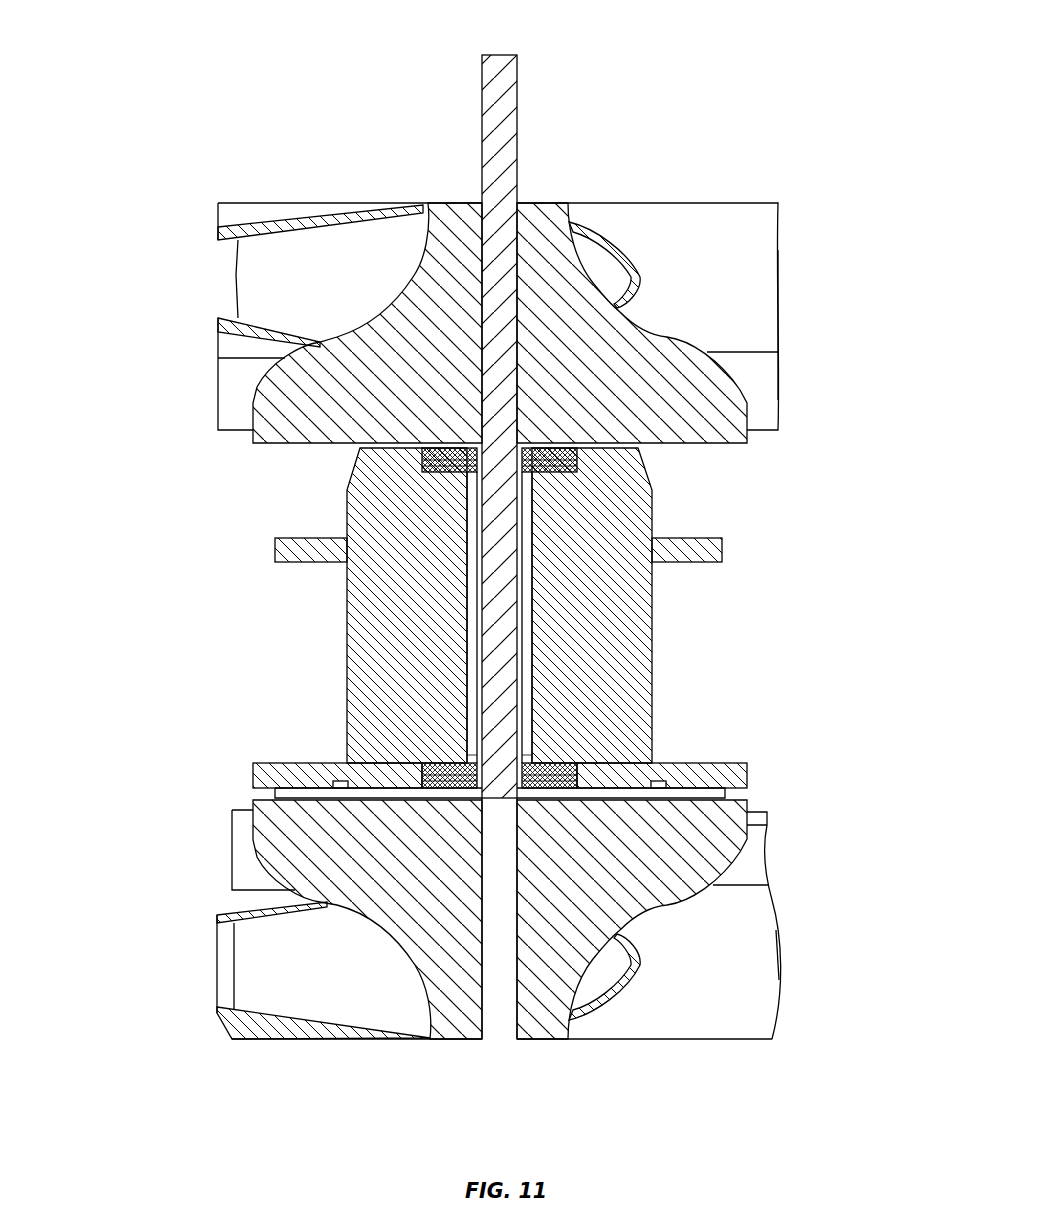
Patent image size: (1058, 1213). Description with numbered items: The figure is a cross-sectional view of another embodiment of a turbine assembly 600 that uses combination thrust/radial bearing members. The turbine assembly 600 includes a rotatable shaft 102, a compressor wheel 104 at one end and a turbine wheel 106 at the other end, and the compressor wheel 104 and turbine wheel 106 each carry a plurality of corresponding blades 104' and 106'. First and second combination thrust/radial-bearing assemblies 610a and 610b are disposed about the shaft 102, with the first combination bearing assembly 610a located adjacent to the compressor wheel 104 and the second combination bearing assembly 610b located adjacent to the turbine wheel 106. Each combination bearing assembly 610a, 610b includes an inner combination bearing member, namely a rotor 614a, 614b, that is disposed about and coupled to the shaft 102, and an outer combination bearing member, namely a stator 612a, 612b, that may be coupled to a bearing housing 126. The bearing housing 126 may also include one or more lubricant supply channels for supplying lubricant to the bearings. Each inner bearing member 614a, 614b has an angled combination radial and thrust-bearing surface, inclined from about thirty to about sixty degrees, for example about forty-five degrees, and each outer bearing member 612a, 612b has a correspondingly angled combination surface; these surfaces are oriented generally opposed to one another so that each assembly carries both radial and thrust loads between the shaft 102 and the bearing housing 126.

The turbine assembly 600 is at (808, 72).
The rotatable shaft 102 is at (505, 95).
The compressor wheel 104 is at (498, 288).
The blades 104' is at (819, 325).
The turbine wheel 106 is at (574, 919).
The blades 106' is at (810, 975).
The bearing housing 126 is at (627, 625).
The first combination thrust/radial-bearing assembly 610a is at (407, 472).
The second combination thrust/radial-bearing assembly 610b is at (407, 765).
The stator 612a is at (422, 458).
The stator 612b is at (422, 780).
The rotor 614a is at (470, 478).
The rotor 614b is at (470, 758).